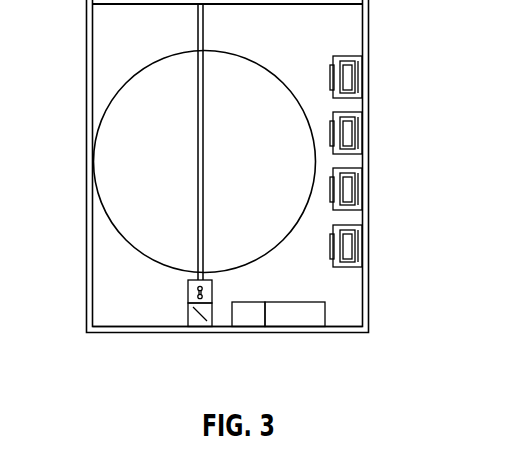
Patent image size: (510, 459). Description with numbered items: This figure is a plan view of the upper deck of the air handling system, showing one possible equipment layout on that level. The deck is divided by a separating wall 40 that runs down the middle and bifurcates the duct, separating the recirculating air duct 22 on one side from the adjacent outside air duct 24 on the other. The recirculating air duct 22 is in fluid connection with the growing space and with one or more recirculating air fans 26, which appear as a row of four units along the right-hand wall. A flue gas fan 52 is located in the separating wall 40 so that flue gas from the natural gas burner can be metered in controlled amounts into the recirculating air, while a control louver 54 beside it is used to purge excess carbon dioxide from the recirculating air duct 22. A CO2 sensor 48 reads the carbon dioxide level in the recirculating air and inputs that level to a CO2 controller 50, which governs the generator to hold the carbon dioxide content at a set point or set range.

The recirculating air duct 22 is at (320, 290).
The outside air duct 24 is at (112, 30).
The recirculating air fans 26 is at (359, 78).
The separating wall 40 is at (204, 17).
The CO2 sensor 48 is at (254, 318).
The CO2 controller 50 is at (303, 318).
The flue gas fan 52 is at (188, 285).
The control louver 54 is at (188, 310).